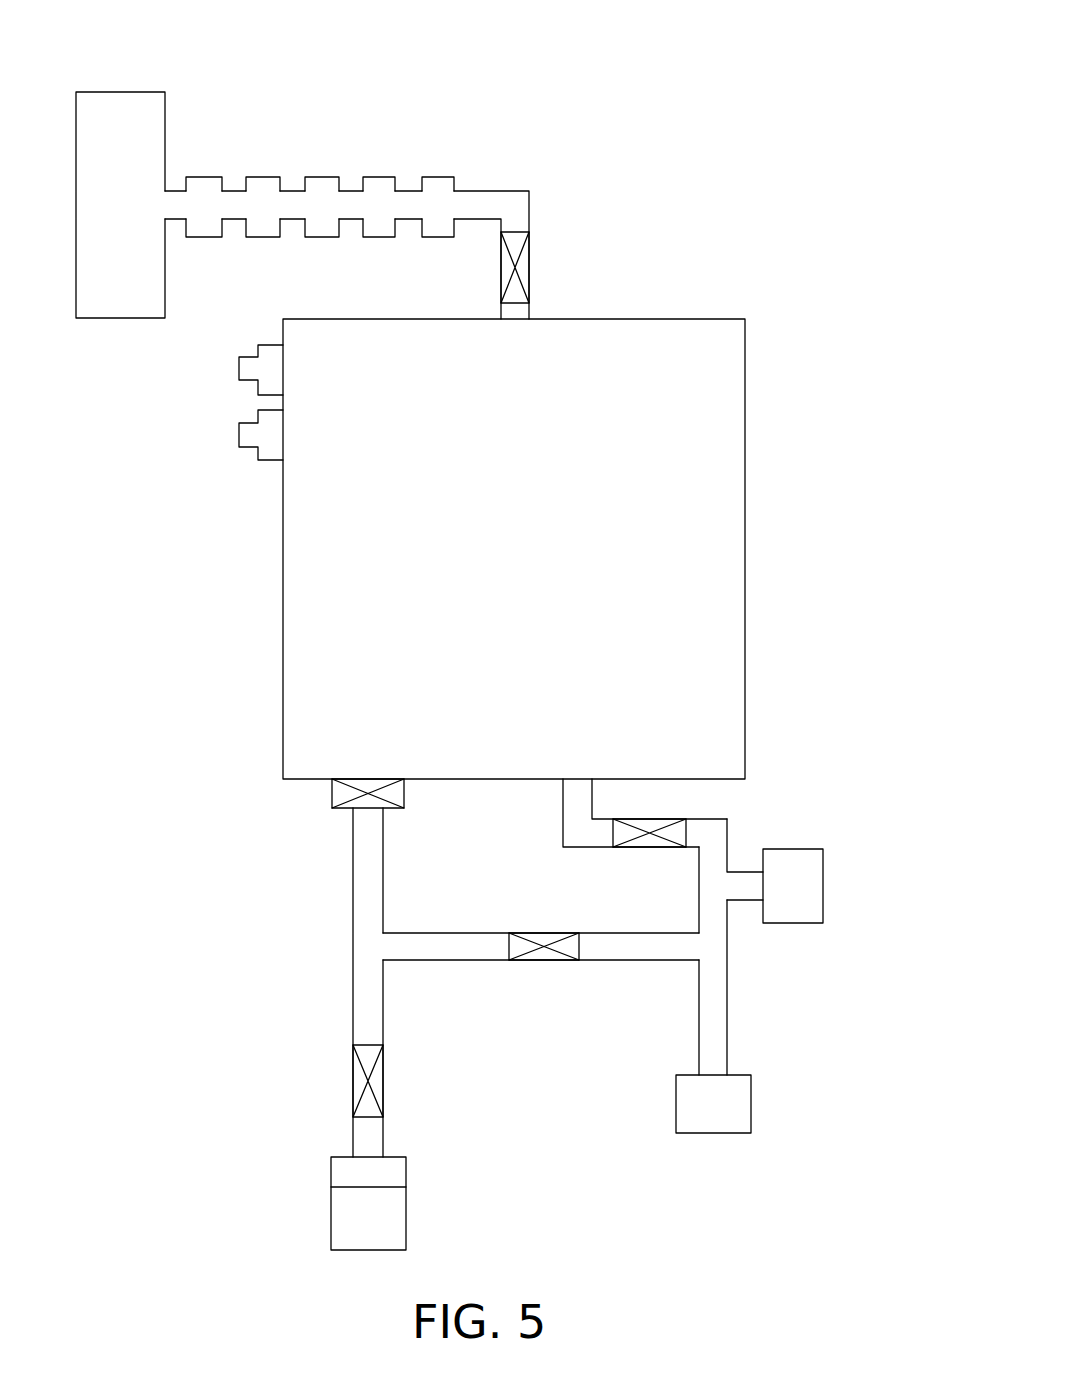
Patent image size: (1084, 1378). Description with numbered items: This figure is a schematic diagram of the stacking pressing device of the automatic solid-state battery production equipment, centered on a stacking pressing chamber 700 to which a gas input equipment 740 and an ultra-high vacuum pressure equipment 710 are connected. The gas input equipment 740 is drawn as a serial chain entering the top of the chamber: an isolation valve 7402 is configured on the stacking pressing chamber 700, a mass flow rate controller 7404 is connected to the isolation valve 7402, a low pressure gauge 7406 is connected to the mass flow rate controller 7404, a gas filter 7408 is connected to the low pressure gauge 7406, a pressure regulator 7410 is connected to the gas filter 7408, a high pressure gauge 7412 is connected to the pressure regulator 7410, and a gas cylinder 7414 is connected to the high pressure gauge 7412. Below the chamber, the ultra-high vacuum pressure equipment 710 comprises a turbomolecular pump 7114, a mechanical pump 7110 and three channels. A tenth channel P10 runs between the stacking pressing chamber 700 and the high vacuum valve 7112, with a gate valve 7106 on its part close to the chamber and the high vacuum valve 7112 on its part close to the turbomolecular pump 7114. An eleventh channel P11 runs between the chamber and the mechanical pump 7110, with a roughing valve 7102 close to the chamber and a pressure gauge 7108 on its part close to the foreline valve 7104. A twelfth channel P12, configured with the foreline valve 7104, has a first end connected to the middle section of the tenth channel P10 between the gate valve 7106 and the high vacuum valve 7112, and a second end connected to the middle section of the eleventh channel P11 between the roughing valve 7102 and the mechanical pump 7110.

The stacking pressing chamber 700 is at (933, 209).
The gas input equipment 740 is at (387, 166).
The gas cylinder 7414 is at (121, 92).
The high pressure gauge 7412 is at (205, 176).
The pressure regulator 7410 is at (262, 176).
The gas filter 7408 is at (322, 176).
The low pressure gauge 7406 is at (380, 177).
The mass flow rate controller 7404 is at (437, 177).
The isolation valve 7402 is at (529, 268).
The ultra-high vacuum pressure equipment 710 is at (479, 1017).
The gate valve 7106 is at (332, 792).
The tenth channel P10 is at (367, 941).
The high vacuum valve 7112 is at (383, 1080).
The turbomolecular pump 7114 is at (331, 1218).
The twelfth channel P12 is at (643, 945).
The foreline valve 7104 is at (540, 933).
The roughing valve 7102 is at (648, 847).
The pressure gauge 7108 is at (790, 923).
The eleventh channel P11 is at (712, 1035).
The mechanical pump 7110 is at (712, 1134).